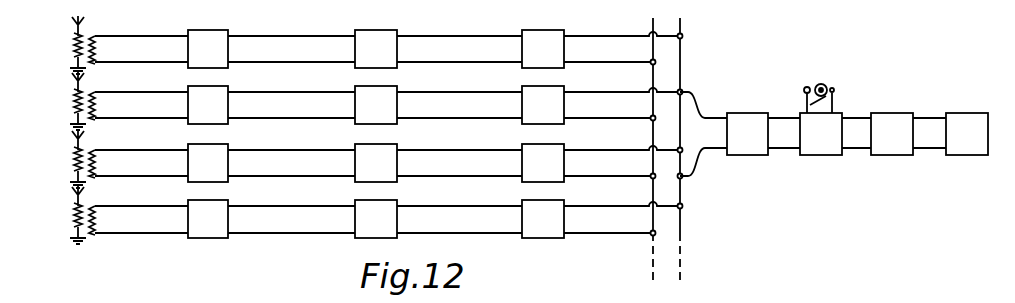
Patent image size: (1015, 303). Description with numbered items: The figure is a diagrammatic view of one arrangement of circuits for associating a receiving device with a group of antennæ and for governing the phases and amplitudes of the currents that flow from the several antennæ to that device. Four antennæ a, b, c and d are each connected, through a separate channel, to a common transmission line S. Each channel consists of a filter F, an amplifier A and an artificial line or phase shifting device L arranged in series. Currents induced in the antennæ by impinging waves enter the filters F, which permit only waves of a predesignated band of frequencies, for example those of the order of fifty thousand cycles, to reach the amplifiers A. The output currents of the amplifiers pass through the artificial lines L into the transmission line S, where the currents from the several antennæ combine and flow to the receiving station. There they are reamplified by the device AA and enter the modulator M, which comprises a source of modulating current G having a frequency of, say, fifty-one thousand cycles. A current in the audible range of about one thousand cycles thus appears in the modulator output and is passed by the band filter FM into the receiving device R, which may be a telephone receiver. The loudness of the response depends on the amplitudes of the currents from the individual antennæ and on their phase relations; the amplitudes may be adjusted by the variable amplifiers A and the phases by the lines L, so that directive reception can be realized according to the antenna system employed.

The antenna a is at (67, 45).
The antenna b is at (67, 101).
The antenna c is at (67, 159).
The antenna d is at (67, 215).
The filter F is at (208, 134).
The amplifier A is at (376, 134).
The artificial line L is at (543, 134).
The transmission line S is at (672, 74).
The reamplifying device AA is at (747, 134).
The modulator M is at (821, 134).
The source of modulating current G is at (837, 92).
The band filter FM is at (892, 134).
The receiving device R is at (967, 134).